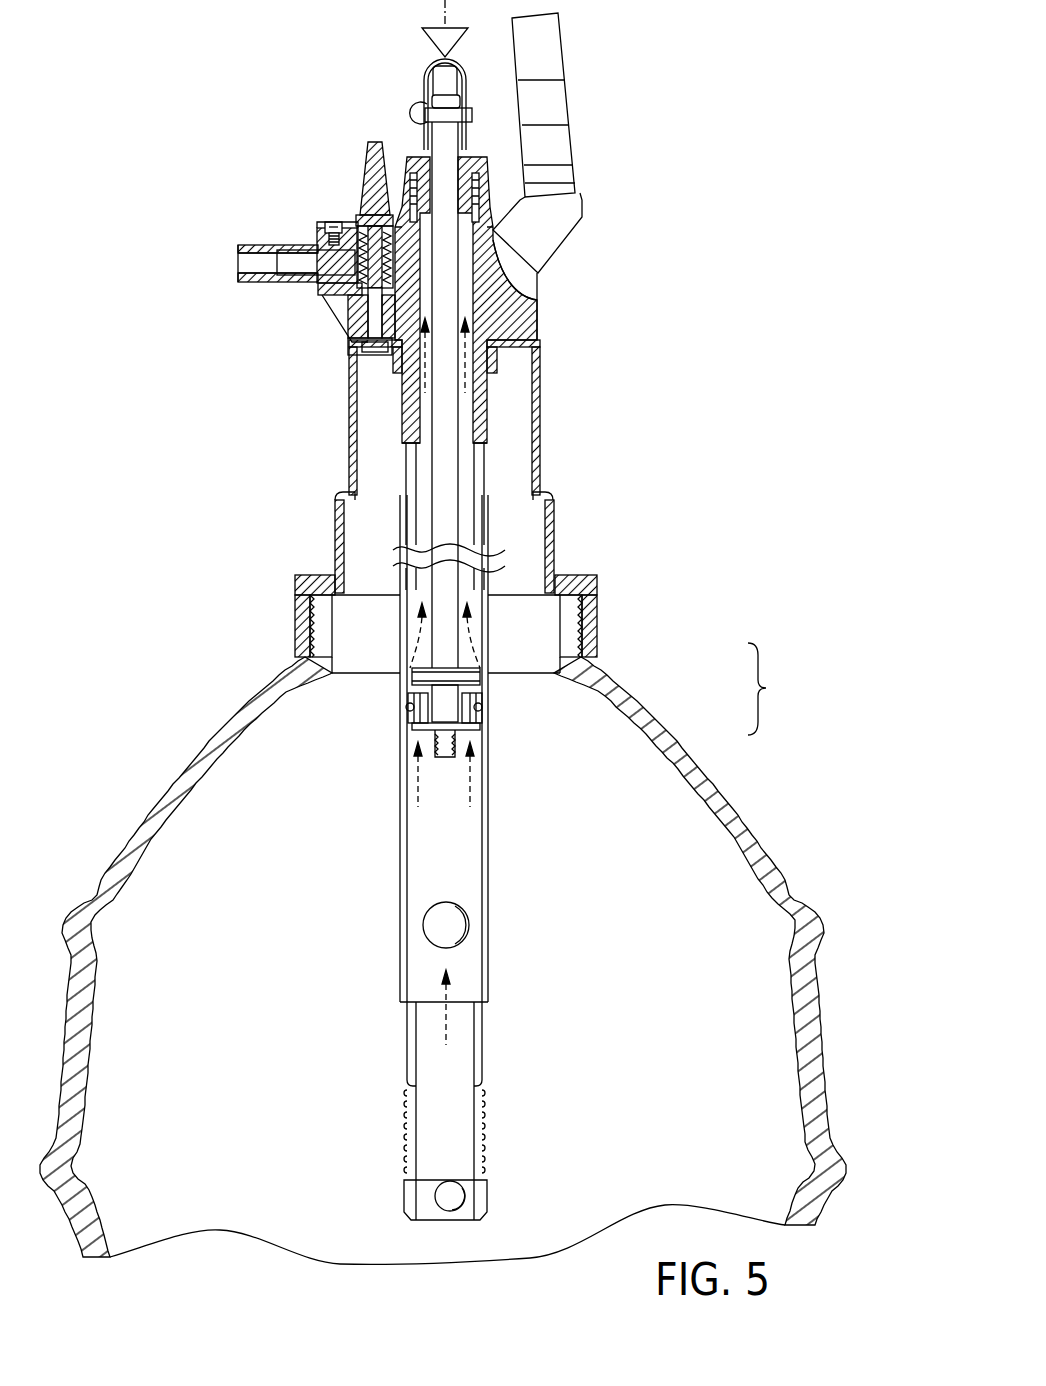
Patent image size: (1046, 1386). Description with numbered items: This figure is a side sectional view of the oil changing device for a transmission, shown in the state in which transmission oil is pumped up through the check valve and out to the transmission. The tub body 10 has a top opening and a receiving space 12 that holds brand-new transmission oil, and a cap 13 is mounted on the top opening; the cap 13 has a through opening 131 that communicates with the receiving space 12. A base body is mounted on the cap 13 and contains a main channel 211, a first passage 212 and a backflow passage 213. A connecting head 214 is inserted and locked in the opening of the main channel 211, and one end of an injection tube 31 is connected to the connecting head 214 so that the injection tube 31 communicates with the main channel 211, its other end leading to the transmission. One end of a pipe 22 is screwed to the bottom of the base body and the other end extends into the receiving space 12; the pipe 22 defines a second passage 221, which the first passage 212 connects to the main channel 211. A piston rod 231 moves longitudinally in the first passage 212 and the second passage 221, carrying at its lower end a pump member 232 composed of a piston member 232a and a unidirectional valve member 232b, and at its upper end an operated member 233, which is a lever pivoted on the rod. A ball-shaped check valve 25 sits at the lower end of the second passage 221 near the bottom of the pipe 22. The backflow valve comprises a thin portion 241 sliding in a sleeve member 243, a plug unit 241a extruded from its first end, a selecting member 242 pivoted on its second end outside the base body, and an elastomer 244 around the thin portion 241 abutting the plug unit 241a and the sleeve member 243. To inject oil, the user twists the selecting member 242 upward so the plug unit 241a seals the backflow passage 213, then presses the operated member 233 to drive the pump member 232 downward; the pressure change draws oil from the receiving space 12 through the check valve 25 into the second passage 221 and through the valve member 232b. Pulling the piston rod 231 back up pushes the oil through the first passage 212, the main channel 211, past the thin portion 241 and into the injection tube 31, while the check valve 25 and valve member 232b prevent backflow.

The tub body 10 is at (145, 837).
The receiving space 12 is at (238, 770).
The cap 13 is at (540, 423).
The through opening 131 is at (362, 350).
The pipe 22 is at (487, 528).
The second passage 221 is at (478, 487).
The piston rod 231 is at (443, 522).
The pump member 232 is at (777, 689).
The piston member 232a is at (470, 676).
The valve member 232b is at (468, 715).
The operated member 233 is at (423, 70).
The check valve 25 is at (450, 925).
The main channel 211 is at (388, 258).
The first passage 212 is at (466, 298).
The backflow passage 213 is at (375, 317).
The connecting head 214 is at (316, 230).
The thin portion 241 is at (388, 215).
The plug unit 241a is at (320, 292).
The selecting member 242 is at (373, 143).
The sleeve member 243 is at (372, 212).
The elastomer 244 is at (347, 248).
The injection tube 31 is at (240, 250).